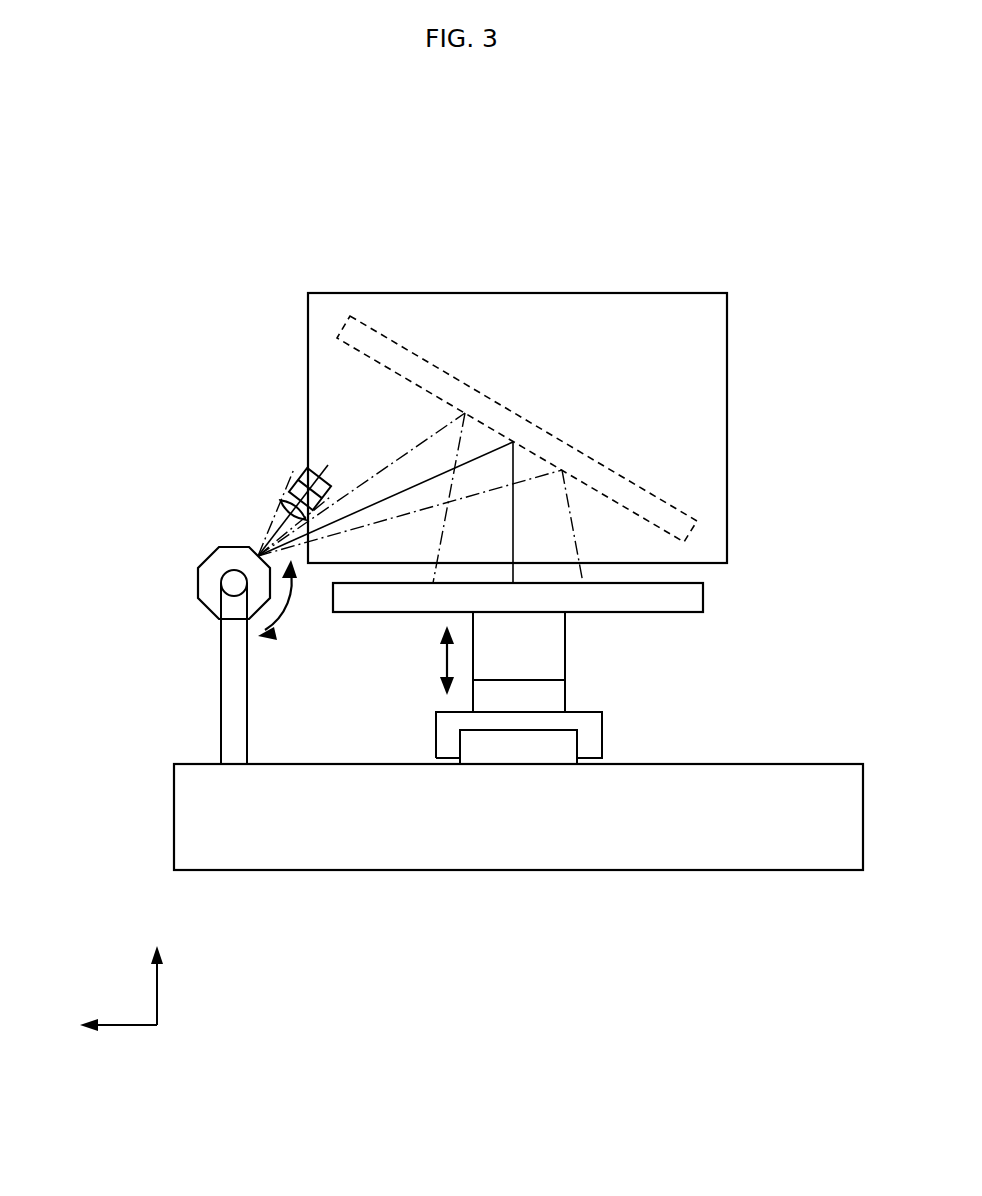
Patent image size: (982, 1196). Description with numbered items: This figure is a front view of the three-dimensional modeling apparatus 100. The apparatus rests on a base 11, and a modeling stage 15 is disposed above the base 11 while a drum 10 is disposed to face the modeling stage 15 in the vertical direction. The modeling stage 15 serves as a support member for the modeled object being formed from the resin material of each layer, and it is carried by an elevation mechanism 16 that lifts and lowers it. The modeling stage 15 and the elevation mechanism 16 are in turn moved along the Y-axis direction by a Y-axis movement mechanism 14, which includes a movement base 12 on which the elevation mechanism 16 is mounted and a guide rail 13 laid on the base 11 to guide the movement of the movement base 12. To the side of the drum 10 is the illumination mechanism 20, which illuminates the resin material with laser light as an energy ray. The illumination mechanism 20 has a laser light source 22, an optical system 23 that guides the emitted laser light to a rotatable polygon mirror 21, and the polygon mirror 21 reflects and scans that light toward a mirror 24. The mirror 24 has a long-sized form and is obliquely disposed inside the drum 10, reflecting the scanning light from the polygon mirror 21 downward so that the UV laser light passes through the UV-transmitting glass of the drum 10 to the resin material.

The 3D modeling apparatus 100 is at (500, 216).
The drum 10 is at (565, 305).
The base 11 is at (370, 857).
The movement base 12 is at (592, 722).
The guide rail 13 is at (565, 746).
The Y-axis movement mechanism 14 is at (582, 723).
The modeling stage 15 is at (695, 598).
The elevation mechanism 16 is at (553, 649).
The illumination mechanism 20 is at (196, 533).
The polygon mirror 21 is at (203, 582).
The laser light source 22 is at (298, 477).
The optical system 23 is at (280, 500).
The mirror 24 is at (408, 347).